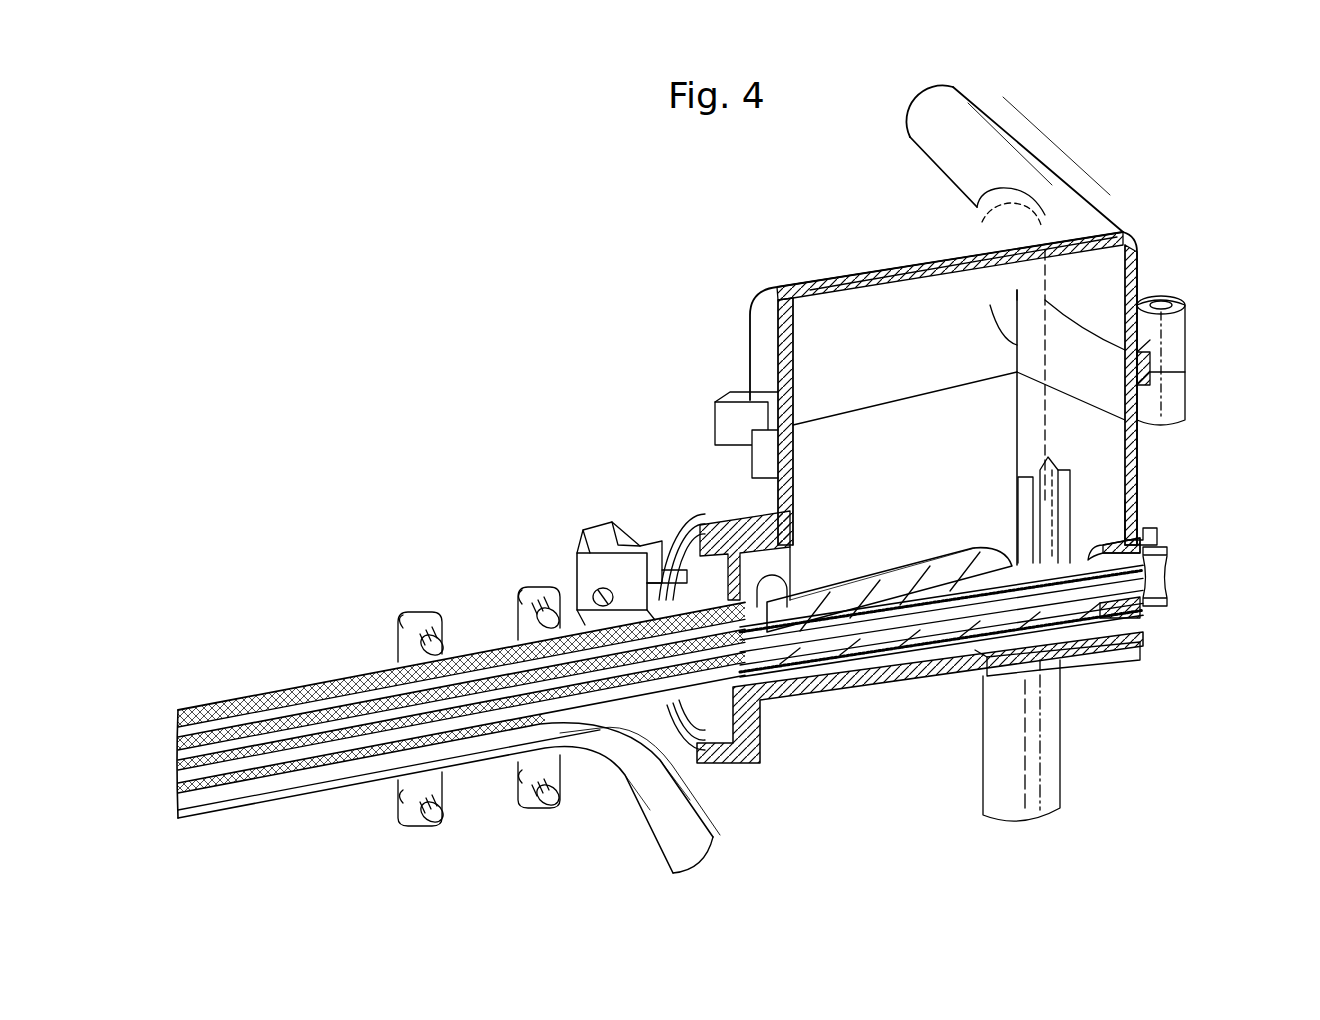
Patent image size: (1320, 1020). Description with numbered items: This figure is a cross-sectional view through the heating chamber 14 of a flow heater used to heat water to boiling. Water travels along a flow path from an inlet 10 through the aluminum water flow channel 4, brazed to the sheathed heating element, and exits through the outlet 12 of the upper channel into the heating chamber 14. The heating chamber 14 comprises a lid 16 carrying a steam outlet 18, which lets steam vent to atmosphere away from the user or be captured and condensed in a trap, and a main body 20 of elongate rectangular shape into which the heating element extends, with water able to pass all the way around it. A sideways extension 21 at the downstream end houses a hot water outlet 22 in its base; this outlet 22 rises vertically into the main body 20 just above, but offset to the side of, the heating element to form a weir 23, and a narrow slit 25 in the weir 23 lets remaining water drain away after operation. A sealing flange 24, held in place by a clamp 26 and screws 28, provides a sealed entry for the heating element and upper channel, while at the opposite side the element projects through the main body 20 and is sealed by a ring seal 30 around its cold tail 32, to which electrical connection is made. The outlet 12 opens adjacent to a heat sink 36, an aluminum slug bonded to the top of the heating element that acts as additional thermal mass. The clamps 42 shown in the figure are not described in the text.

The water flow channel 4 is at (303, 773).
The inlet 10 is at (670, 837).
The outlet 12 is at (767, 697).
The heating chamber 14 is at (706, 346).
The lid 16 is at (1130, 263).
The steam outlet 18 is at (993, 138).
The main body 20 is at (1140, 497).
The sideways extension 21 is at (1027, 343).
The hot water outlet 22 is at (1037, 770).
The weir 23 is at (1037, 527).
The sealing flange 24 is at (698, 567).
The narrow slit 25 is at (1063, 495).
The clamp 26 is at (603, 570).
The screws 28 is at (585, 578).
The ring seal 30 is at (1150, 552).
The cold tail 32 is at (1157, 583).
The heat sink 36 is at (855, 600).
The clamp 42 is at (398, 615).